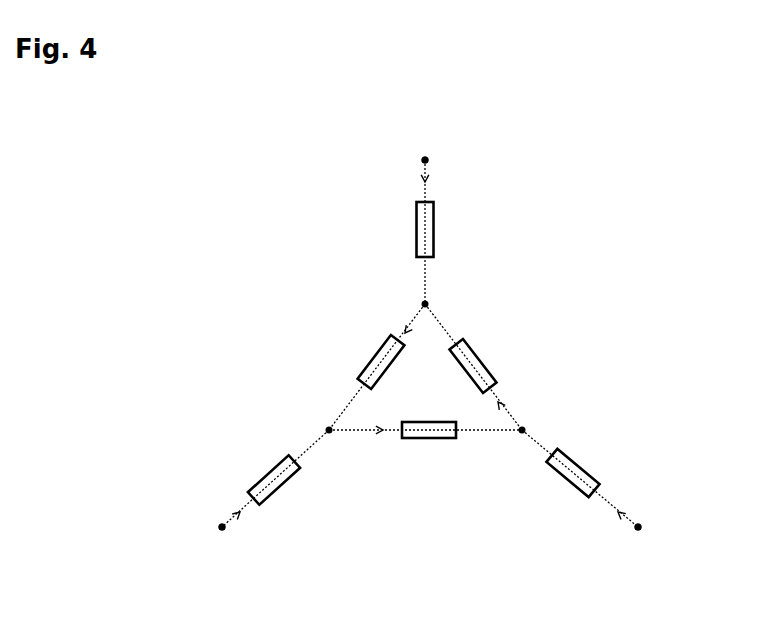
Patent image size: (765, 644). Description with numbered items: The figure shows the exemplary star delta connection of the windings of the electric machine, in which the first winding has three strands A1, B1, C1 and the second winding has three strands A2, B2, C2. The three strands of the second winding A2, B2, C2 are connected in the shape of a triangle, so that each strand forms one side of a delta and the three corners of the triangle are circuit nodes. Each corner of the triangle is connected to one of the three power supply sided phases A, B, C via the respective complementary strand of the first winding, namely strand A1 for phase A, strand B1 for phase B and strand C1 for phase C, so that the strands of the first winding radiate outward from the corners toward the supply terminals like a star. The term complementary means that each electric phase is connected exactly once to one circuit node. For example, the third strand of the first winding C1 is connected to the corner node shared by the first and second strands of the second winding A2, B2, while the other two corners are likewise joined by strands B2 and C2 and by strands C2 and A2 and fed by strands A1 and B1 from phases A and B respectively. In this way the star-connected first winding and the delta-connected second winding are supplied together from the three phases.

The power supply sided phase A is at (221, 541).
The power supply sided phase B is at (424, 148).
The power supply sided phase C is at (636, 541).
The first strand of the first winding A1 is at (271, 478).
The first strand of the second winding A2 is at (477, 366).
The second strand of the first winding B1 is at (441, 229).
The second strand of the second winding B2 is at (429, 443).
The third strand of the first winding C1 is at (569, 474).
The third strand of the second winding C2 is at (376, 362).